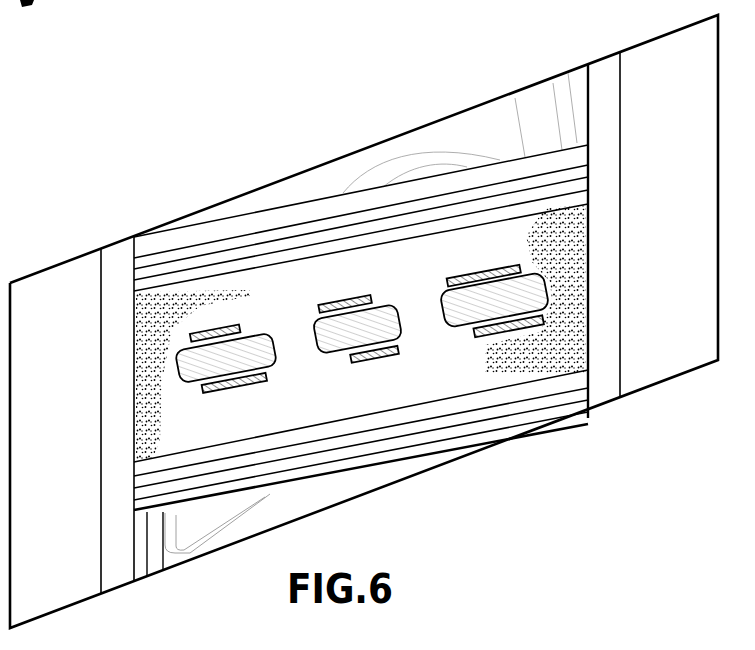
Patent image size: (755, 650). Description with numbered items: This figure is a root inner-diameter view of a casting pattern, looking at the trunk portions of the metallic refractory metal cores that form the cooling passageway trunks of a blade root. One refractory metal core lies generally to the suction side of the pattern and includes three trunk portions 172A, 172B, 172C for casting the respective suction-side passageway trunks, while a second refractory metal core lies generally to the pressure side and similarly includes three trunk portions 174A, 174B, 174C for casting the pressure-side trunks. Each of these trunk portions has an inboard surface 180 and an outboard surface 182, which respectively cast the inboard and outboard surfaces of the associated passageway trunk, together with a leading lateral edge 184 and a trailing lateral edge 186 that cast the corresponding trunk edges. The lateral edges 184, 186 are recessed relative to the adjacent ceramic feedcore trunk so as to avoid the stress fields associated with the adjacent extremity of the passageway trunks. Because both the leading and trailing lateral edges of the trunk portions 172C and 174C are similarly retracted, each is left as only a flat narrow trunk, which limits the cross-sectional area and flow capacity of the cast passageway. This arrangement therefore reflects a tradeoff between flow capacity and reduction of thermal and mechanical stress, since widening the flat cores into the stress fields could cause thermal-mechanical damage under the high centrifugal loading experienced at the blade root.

The trunk portion 174A is at (502, 260).
The trunk portion 174B is at (350, 288).
The trunk portion 174C is at (218, 322).
The trunk portion 172A is at (489, 349).
The trunk portion 172B is at (372, 375).
The trunk portion 172C is at (215, 402).
The inboard surface 180 is at (547, 301).
The outboard surface 182 is at (517, 268).
The leading lateral edge 184 is at (538, 270).
The trailing lateral edge 186 is at (452, 282).